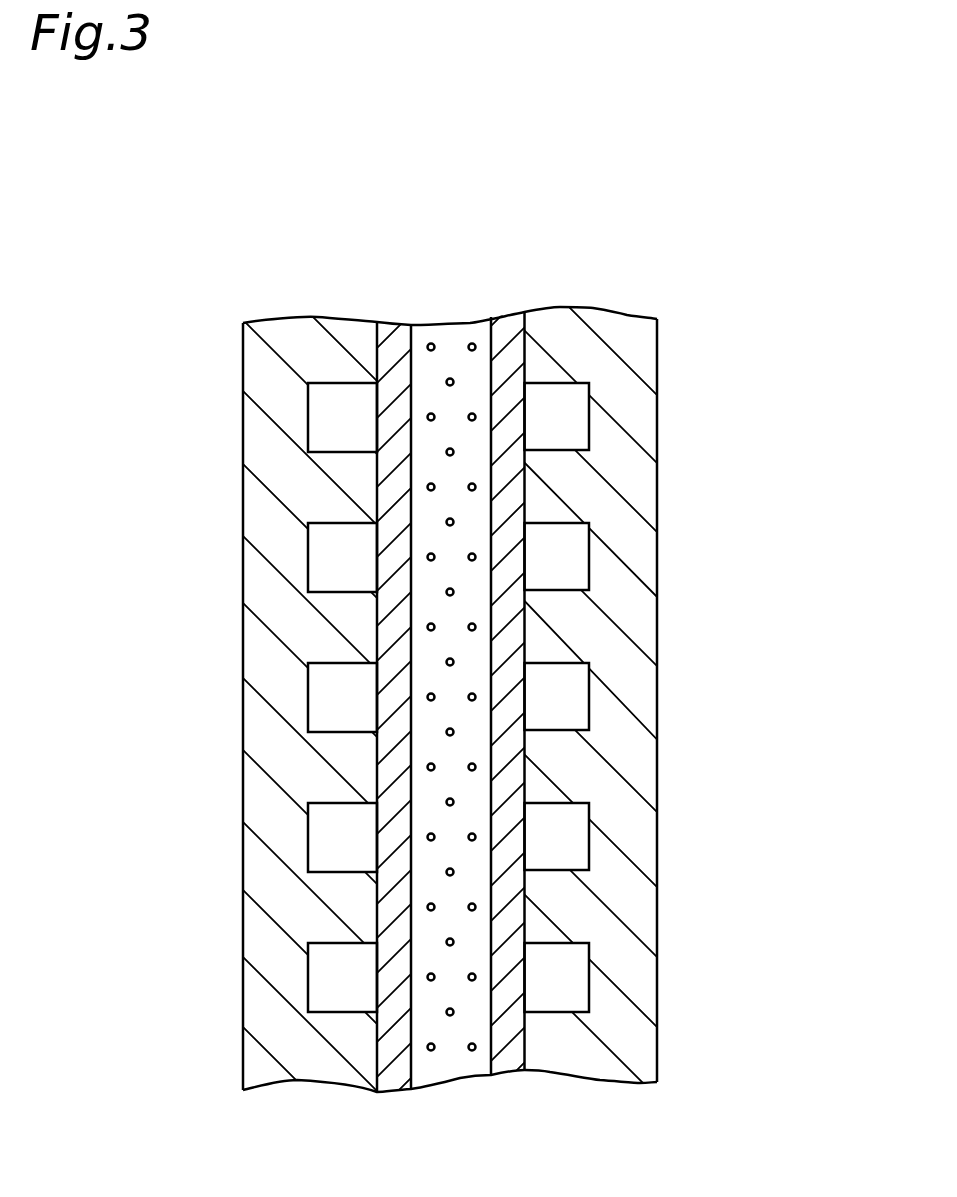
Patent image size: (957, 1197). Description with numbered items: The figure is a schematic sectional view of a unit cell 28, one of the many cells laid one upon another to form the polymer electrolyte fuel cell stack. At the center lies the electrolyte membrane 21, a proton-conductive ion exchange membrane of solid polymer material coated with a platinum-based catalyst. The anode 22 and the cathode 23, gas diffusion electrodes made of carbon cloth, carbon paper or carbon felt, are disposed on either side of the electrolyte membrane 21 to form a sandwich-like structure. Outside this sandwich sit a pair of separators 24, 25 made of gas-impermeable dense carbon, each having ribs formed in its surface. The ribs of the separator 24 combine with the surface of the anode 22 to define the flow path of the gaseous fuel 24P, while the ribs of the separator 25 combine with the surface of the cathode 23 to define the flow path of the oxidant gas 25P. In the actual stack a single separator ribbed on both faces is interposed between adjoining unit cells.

The electrolyte membrane 21 is at (450, 323).
The anode 22 is at (510, 315).
The cathode 23 is at (397, 322).
The separator 24 is at (603, 308).
The flow path of the gaseous fuel 24P is at (573, 550).
The separator 25 is at (305, 316).
The flow path of the oxidant gas 25P is at (323, 552).
The unit cell 28 is at (733, 224).